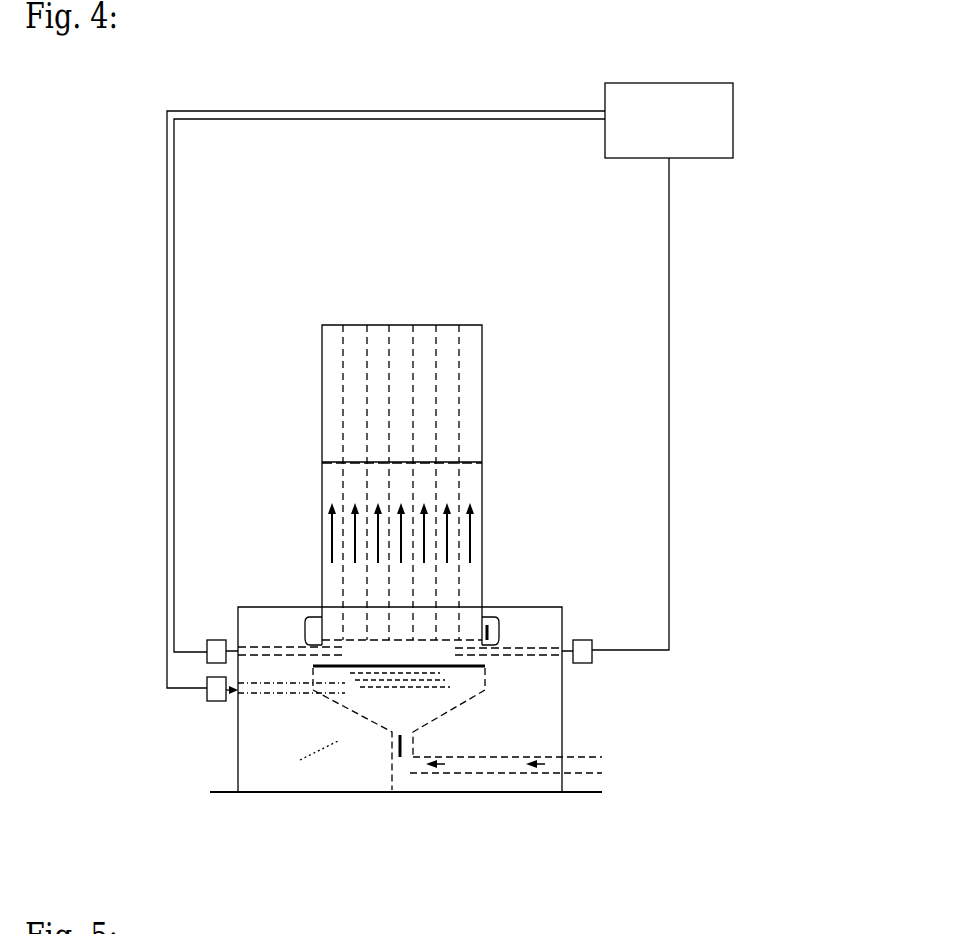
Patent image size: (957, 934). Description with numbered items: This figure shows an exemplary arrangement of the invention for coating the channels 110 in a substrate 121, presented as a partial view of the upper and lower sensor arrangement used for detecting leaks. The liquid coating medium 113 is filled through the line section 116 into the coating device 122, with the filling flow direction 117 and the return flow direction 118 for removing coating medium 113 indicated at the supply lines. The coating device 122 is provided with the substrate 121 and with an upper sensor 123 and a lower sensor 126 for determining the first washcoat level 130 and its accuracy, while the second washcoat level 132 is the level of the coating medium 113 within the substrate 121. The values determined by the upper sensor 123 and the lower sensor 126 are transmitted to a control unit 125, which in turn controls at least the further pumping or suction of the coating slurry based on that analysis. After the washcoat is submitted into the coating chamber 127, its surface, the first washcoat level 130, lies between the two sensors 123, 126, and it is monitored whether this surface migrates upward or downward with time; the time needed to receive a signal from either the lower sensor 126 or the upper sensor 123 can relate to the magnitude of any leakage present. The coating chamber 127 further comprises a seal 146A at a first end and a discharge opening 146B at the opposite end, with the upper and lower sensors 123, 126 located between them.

The channels 110 is at (445, 322).
The coating medium 113 is at (380, 700).
The line section 116 is at (495, 745).
The filling flow direction 117 is at (450, 792).
The return flow direction 118 is at (527, 795).
The substrate 121 is at (314, 336).
The coating device 122 is at (229, 718).
The upper sensor 123 is at (216, 640).
The control unit 125 is at (745, 121).
The lower sensor 126 is at (204, 687).
The coating chamber 127 is at (349, 724).
The first washcoat level 130 is at (389, 655).
The second washcoat level 132 is at (358, 455).
The seal 146A is at (487, 625).
The discharge opening 146B is at (400, 735).